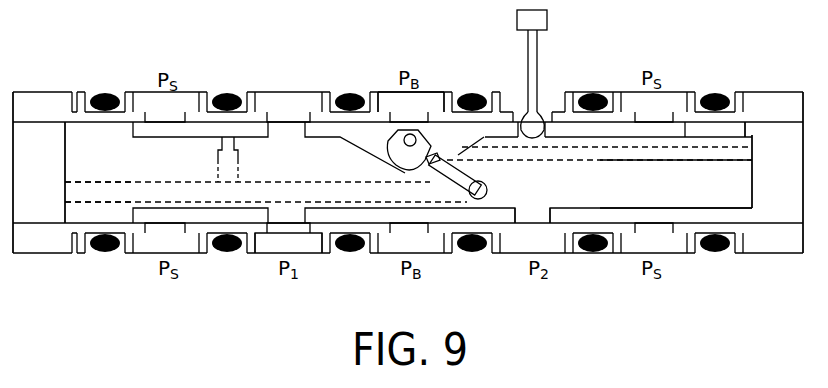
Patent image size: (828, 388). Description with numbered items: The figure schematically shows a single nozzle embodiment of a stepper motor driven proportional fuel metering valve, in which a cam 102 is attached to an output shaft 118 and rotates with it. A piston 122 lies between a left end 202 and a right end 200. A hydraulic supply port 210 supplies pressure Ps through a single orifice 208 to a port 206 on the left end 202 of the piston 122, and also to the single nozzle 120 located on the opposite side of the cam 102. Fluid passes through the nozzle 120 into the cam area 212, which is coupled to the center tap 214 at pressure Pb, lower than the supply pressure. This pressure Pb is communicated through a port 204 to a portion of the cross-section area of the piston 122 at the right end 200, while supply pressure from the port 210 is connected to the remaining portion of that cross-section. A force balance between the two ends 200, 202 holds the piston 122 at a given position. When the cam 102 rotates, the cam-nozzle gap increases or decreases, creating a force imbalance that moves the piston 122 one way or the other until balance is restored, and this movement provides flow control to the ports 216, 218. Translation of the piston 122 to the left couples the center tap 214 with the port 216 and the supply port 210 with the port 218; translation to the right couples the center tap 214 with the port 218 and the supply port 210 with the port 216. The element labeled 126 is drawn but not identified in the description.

The right end 200 is at (755, 183).
The left end 202 is at (72, 153).
The port 204 is at (750, 152).
The port 206 is at (65, 193).
The orifice 208 is at (230, 152).
The hydraulic supply port 210 is at (187, 97).
The cam area 212 is at (365, 135).
The center tap 214 is at (428, 98).
The port 216 is at (278, 230).
The port 218 is at (538, 227).
The cam 102 is at (412, 165).
The output shaft 118 is at (405, 133).
The nozzle 120 is at (425, 168).
The piston 122 is at (680, 193).
The actuator pin 126 is at (622, 121).